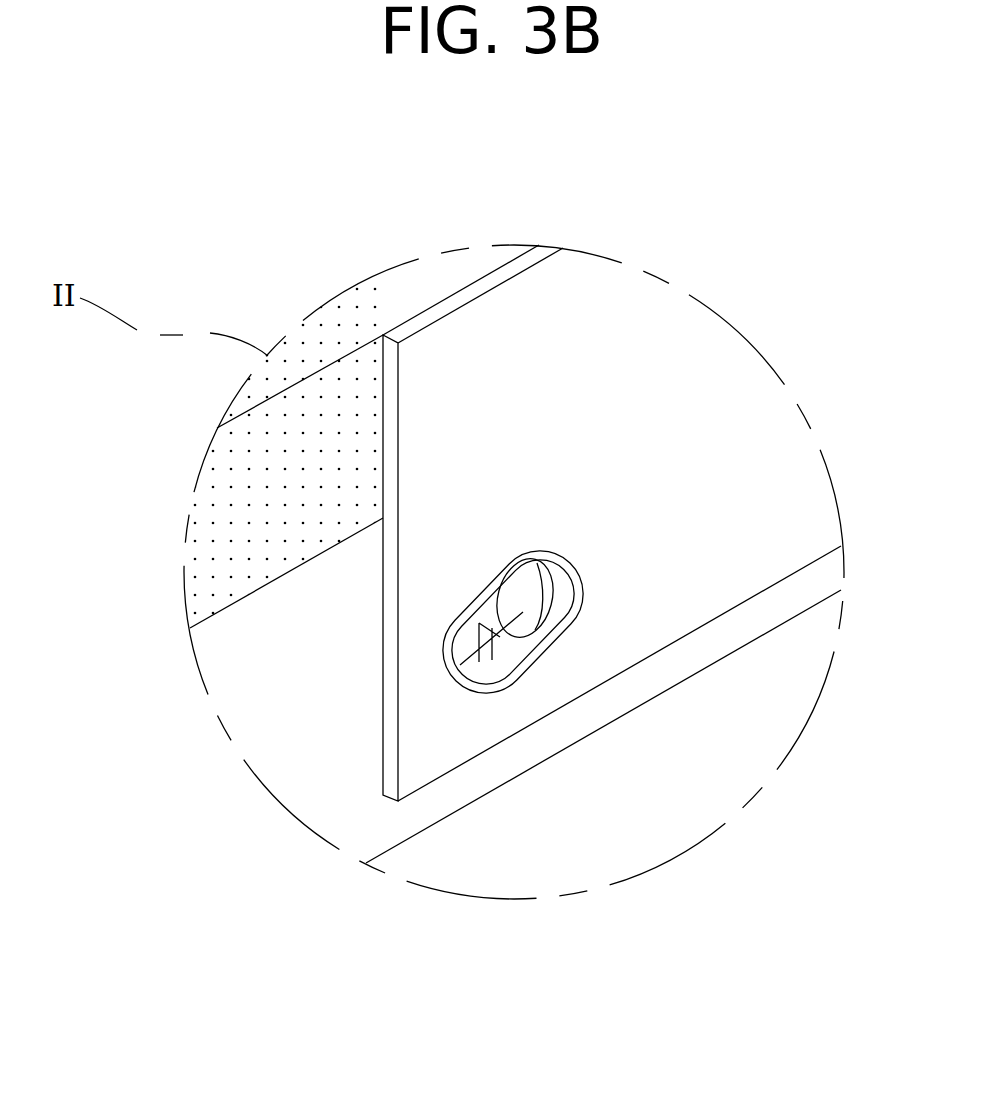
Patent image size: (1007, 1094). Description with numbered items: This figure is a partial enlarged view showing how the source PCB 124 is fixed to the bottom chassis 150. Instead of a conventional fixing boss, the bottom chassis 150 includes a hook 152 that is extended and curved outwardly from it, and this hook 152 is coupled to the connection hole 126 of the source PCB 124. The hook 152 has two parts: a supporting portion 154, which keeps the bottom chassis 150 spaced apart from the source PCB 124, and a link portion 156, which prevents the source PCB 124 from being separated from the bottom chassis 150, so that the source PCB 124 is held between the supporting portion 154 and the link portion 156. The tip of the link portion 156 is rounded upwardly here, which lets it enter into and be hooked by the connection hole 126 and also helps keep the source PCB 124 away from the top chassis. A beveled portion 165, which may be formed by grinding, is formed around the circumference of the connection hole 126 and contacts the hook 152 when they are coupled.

The source PCB 124 is at (758, 438).
The connection hole 126 is at (567, 565).
The bottom chassis 150 is at (290, 729).
The hook 152 is at (393, 975).
The supporting portion 154 is at (463, 653).
The link portion 156 is at (518, 645).
The beveled portion 165 is at (555, 593).